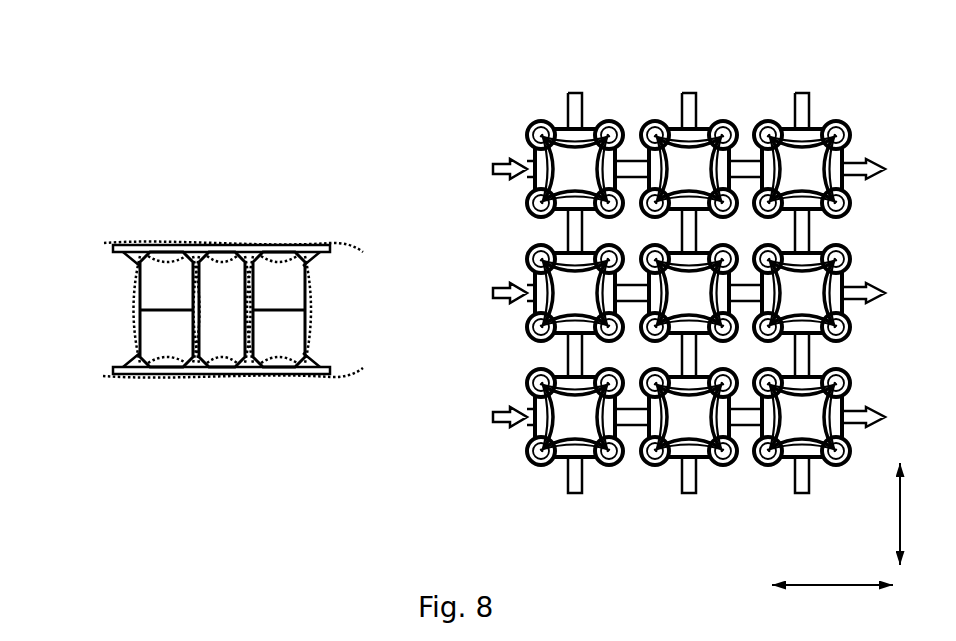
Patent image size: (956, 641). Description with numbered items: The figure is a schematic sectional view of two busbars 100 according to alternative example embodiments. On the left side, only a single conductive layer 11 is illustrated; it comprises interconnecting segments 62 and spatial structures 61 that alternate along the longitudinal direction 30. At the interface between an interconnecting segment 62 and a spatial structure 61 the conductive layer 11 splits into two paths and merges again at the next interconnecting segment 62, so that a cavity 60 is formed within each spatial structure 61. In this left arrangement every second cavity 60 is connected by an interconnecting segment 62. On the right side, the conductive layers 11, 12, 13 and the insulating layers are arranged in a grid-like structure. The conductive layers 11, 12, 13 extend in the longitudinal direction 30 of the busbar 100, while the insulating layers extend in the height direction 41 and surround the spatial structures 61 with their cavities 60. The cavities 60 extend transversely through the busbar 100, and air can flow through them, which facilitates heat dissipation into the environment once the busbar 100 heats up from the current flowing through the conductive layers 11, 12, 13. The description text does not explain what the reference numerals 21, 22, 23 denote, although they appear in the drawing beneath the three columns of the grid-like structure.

The busbar 100 is at (303, 200).
The conductive layer 11 is at (116, 306).
The conductive layer 12 is at (487, 295).
The conductive layer 13 is at (483, 418).
The first vertical channel / column 21 is at (327, 383).
The second vertical channel / column 22 is at (656, 472).
The third vertical channel / column 23 is at (770, 470).
The longitudinal direction 30 is at (832, 604).
The height direction 41 is at (919, 514).
The cavity 60 is at (275, 288).
The spatial structure 61 is at (552, 102).
The interconnecting segment 62 is at (156, 320).